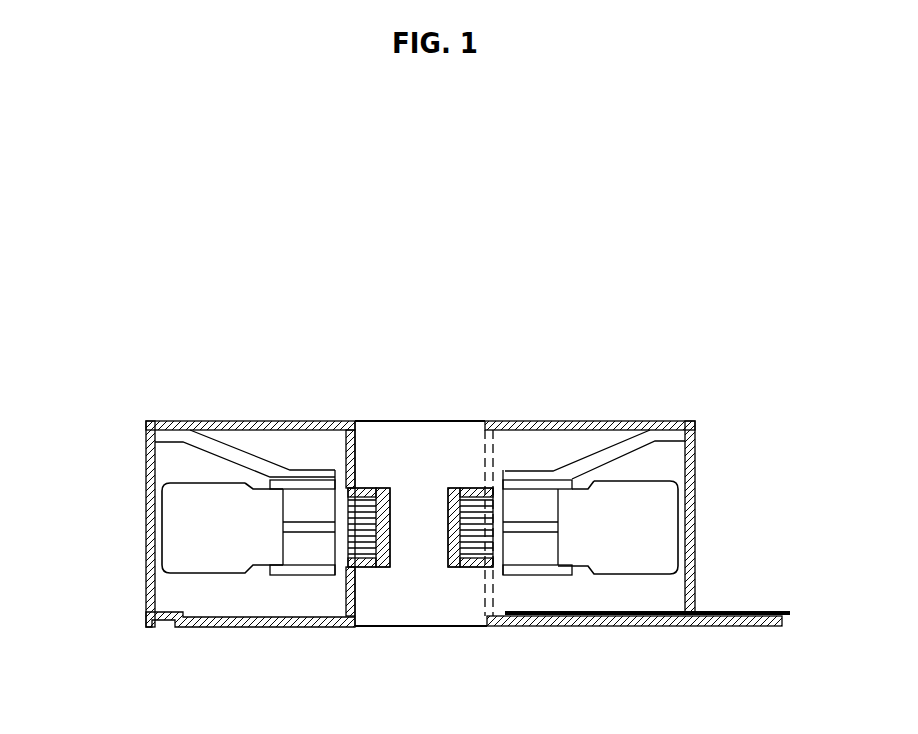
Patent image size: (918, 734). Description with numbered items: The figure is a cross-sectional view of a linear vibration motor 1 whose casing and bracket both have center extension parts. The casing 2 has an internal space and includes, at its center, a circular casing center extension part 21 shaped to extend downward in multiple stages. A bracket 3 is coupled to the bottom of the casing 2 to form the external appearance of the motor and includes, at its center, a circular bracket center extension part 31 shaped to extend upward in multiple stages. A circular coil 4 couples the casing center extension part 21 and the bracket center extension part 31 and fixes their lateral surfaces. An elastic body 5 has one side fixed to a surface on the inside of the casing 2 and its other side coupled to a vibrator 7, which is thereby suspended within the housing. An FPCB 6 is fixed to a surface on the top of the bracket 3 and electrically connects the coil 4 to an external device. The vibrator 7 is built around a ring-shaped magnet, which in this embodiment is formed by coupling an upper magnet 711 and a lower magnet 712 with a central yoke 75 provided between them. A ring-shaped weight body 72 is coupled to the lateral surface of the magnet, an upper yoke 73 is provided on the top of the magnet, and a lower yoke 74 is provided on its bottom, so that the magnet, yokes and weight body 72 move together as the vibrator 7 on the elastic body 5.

The linear vibration motor 1 is at (649, 283).
The casing 2 is at (260, 428).
The casing center extension part 21 is at (356, 438).
The bracket 3 is at (220, 627).
The bracket center extension part 31 is at (358, 590).
The coil 4 is at (373, 510).
The elastic body 5 is at (598, 452).
The FPCB 6 is at (740, 611).
The vibrator 7 is at (665, 465).
The weight body 72 is at (175, 520).
The upper yoke 73 is at (526, 483).
The lower yoke 74 is at (552, 577).
The central yoke 75 is at (515, 532).
The upper magnet 711 is at (310, 495).
The lower magnet 712 is at (313, 553).